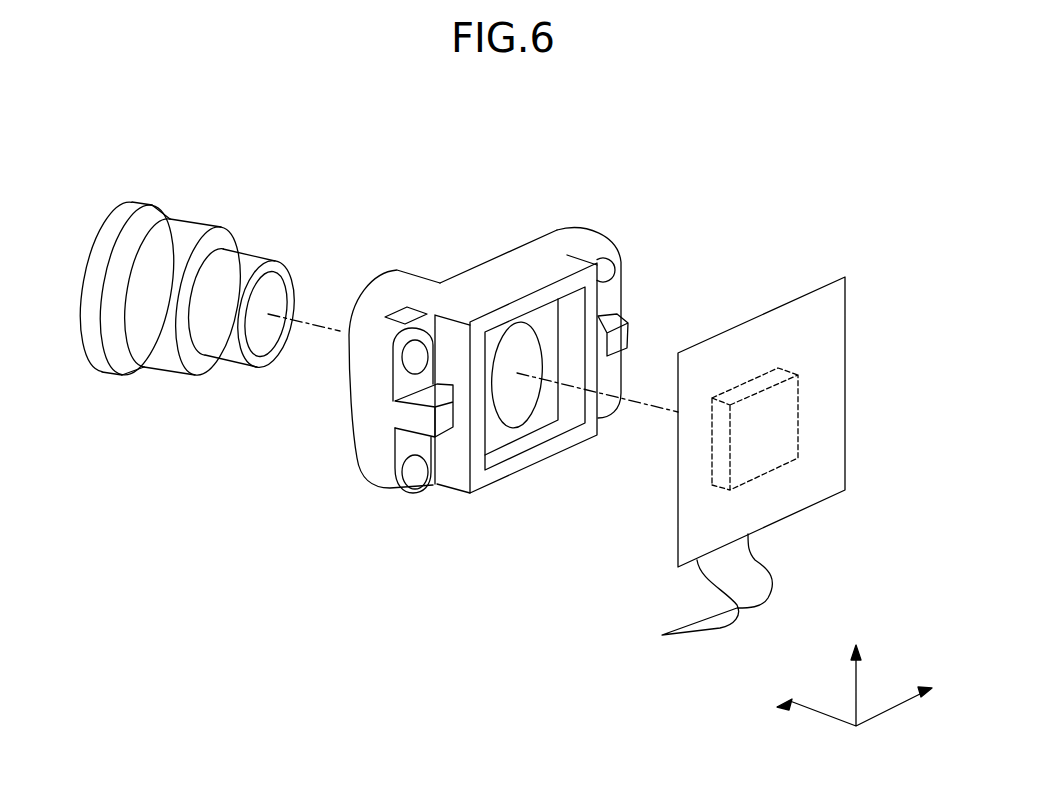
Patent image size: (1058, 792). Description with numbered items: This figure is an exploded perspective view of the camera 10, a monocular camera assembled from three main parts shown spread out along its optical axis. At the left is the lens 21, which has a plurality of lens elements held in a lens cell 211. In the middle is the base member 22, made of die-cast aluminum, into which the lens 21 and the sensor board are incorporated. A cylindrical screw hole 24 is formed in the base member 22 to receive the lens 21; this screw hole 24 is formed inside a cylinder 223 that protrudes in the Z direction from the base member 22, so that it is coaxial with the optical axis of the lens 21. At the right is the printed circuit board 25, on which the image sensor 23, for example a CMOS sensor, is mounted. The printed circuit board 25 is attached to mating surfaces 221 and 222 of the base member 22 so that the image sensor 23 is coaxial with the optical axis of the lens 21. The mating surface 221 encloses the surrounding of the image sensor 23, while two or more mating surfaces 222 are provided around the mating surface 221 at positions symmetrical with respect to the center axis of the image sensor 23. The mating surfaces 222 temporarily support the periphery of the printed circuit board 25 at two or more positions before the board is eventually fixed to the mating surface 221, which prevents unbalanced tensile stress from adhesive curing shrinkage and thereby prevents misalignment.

The camera 10 is at (928, 121).
The lens 21 is at (108, 178).
The lens cell 211 is at (158, 353).
The base member 22 is at (510, 275).
The mating surface 221 is at (552, 447).
The mating surfaces 222 is at (445, 420).
The cylinder 223 is at (404, 290).
The image sensor 23 is at (778, 423).
The screw hole 24 is at (510, 405).
The printed circuit board 25 is at (692, 521).